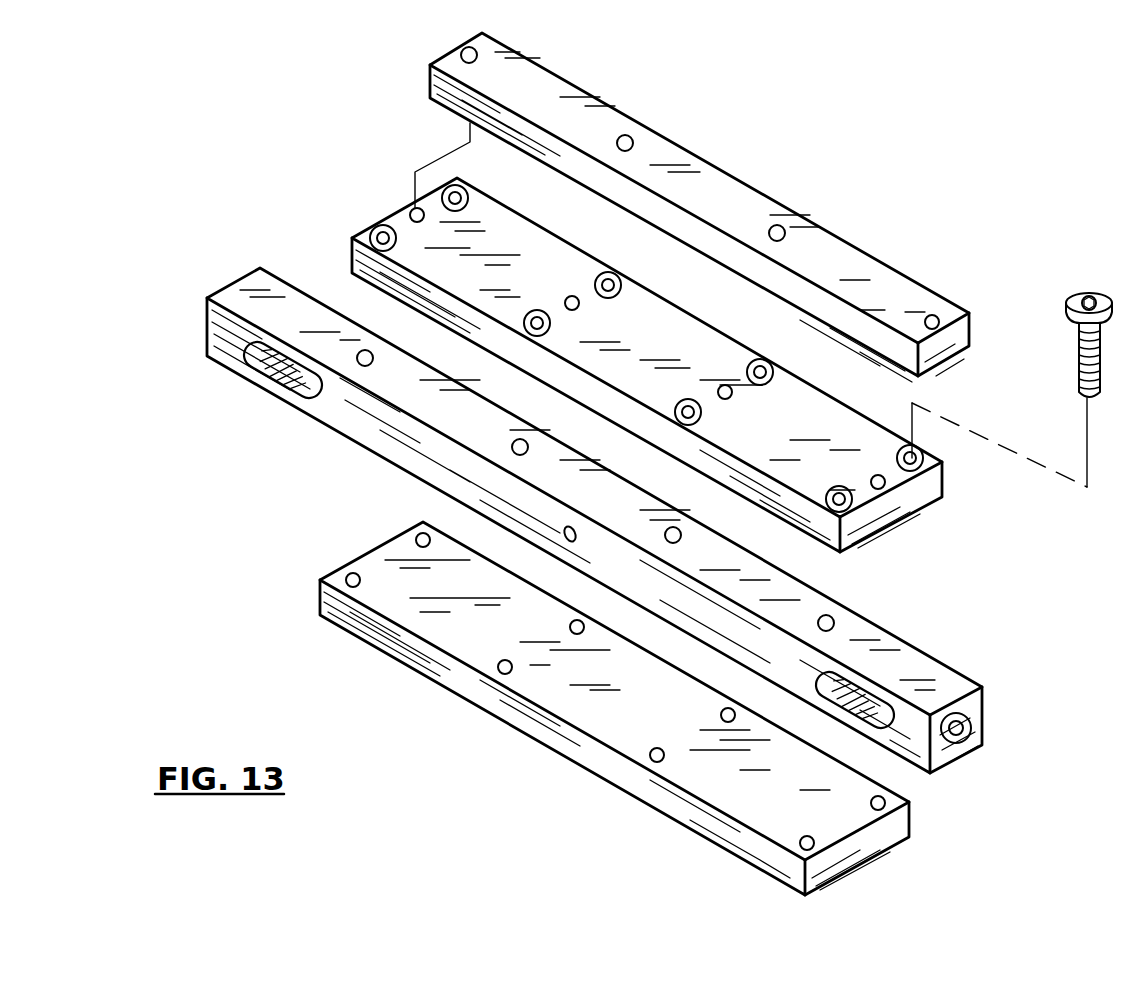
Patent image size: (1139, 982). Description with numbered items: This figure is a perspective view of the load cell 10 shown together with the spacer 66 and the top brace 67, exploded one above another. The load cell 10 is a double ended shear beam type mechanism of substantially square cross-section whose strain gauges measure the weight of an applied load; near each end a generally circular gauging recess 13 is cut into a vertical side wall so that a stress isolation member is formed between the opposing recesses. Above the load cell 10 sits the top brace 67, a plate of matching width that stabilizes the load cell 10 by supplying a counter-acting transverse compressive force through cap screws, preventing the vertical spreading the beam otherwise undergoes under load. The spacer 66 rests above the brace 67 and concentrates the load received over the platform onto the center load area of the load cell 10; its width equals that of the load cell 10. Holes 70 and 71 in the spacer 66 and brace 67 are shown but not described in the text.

The load cell 10 is at (945, 676).
The gauging recess 13 is at (280, 378).
The spacer 66 is at (900, 293).
The top brace 67 is at (908, 508).
The hole 70 is at (782, 226).
The small hole 71 is at (570, 296).